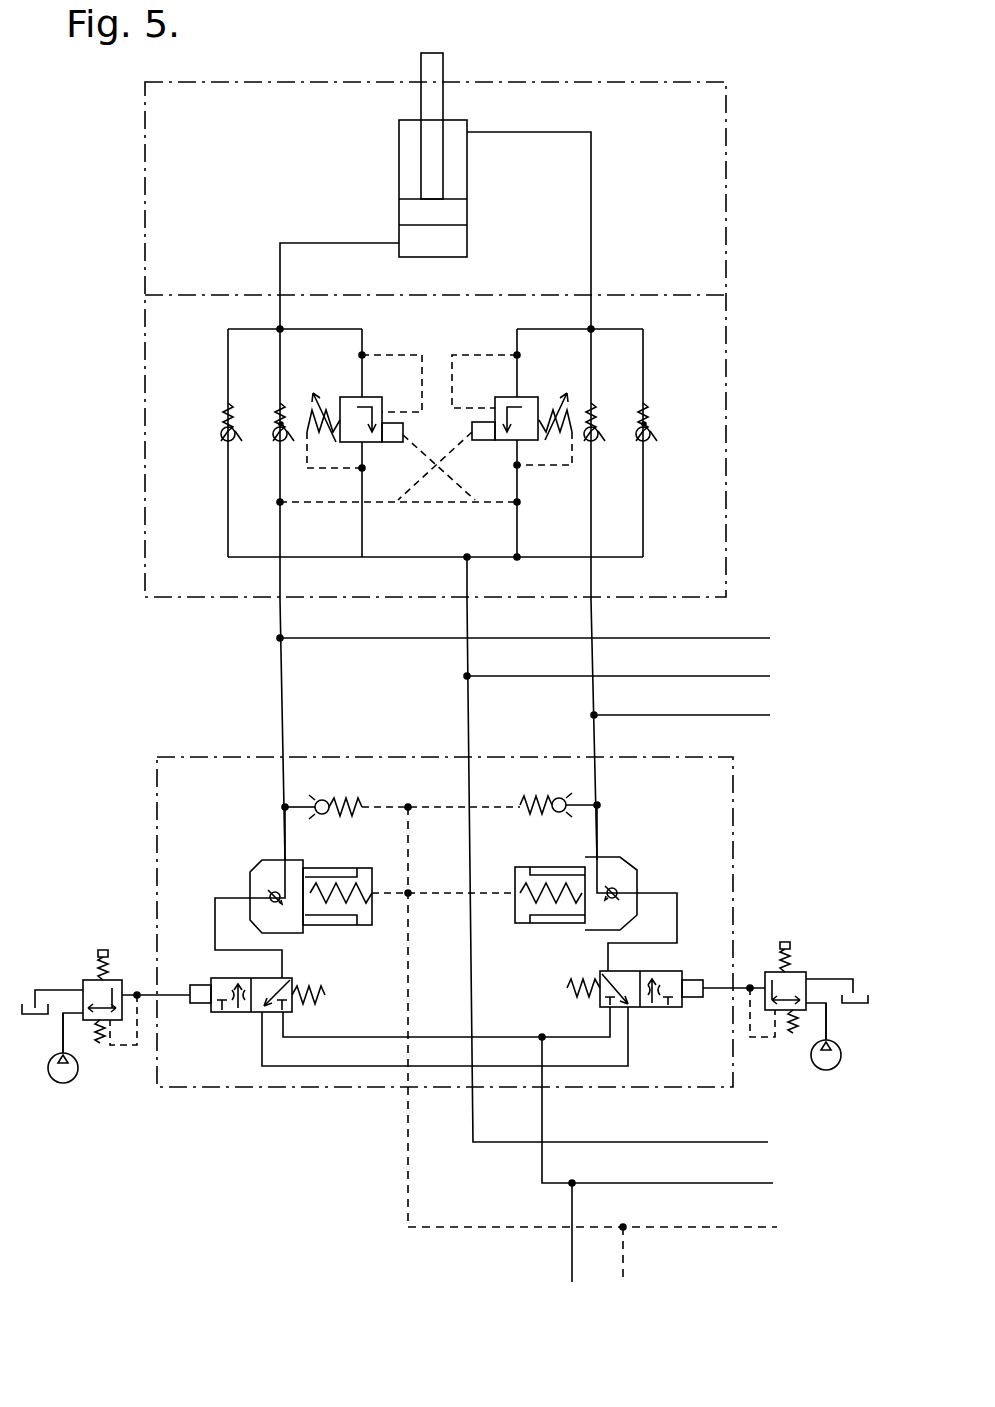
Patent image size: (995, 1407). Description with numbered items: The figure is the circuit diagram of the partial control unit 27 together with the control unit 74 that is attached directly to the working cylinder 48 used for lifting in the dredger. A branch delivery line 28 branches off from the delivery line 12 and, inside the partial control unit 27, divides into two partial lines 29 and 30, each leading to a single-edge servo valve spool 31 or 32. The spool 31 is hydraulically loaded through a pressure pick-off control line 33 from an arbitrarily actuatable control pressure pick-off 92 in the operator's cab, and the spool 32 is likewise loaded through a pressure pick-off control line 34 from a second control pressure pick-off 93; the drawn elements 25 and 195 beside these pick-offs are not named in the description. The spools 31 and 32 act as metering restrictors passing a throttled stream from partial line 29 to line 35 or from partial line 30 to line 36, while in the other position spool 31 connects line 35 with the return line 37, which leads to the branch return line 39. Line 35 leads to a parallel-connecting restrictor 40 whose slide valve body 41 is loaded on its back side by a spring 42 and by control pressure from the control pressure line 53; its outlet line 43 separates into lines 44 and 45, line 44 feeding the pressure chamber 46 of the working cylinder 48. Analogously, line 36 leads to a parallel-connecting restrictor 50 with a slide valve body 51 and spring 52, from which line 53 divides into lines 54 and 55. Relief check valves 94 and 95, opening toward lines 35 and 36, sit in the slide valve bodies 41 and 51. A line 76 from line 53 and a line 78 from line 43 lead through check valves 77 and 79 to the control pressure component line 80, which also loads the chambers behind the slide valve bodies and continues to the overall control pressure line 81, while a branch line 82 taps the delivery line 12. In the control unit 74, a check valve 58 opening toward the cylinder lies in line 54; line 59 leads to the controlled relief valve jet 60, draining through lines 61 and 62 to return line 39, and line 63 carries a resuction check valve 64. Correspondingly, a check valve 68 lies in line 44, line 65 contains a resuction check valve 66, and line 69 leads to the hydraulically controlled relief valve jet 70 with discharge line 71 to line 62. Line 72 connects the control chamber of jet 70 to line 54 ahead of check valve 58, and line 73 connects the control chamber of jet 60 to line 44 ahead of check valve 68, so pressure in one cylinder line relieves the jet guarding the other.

The delivery line 12 is at (572, 1207).
The pilot pump 25 is at (70, 1078).
The partial control unit 27 is at (733, 872).
The branch delivery line 28 is at (542, 1124).
The partial line 29 is at (743, 677).
The partial line 30 is at (340, 1038).
The single-edge servo valve spool 31 is at (662, 1012).
The single-edge servo valve spool 32 is at (231, 1012).
The pressure pick-off control line 33 is at (262, 1062).
The pressure pick-off control line 34 is at (166, 990).
The line 35 is at (677, 915).
The line 36 is at (214, 928).
The return line 37 is at (631, 1063).
The branch return line 39 is at (469, 616).
The parallel-connecting restrictor 40 is at (622, 860).
The slide valve body 41 is at (549, 866).
The spring 42 is at (519, 874).
The line 43 is at (594, 734).
The line 44 is at (598, 698).
The line 45 is at (743, 716).
The pressure chamber 46 is at (452, 170).
The working cylinder 48 is at (399, 163).
The parallel-connecting restrictor 50 is at (265, 864).
The slide valve body 51 is at (325, 866).
The spring 52 is at (340, 884).
The control pressure line 53 is at (285, 697).
The line 54 is at (279, 268).
The line 55 is at (743, 636).
The check valve 58 is at (283, 445).
The line 59 is at (362, 344).
The controlled relief valve jet 60 is at (345, 397).
The line 61 is at (362, 527).
The line 62 is at (435, 554).
The line 63 is at (228, 366).
The resuction check valve 64 is at (224, 432).
The line 65 is at (643, 351).
The resuction check valve 66 is at (650, 425).
The check valve 68 is at (600, 443).
The line 69 is at (517, 330).
The hydraulically controlled relief valve jet 70 is at (540, 397).
The discharge line 71 is at (517, 527).
The line 72 is at (420, 487).
The line 73 is at (455, 487).
The control unit 74 is at (726, 362).
The line 76 is at (285, 807).
The check valve 77 is at (320, 803).
The line 78 is at (597, 802).
The check valve 79 is at (546, 798).
The control pressure component line 80 is at (408, 862).
The overall control pressure line 81 is at (623, 1258).
The branch line 82 is at (615, 1182).
The control pressure pick-off 92 is at (796, 974).
The control pressure pick-off 93 is at (88, 984).
The relief check valve 94 is at (618, 888).
The relief check valve 95 is at (263, 894).
The pump line 195 is at (60, 1036).